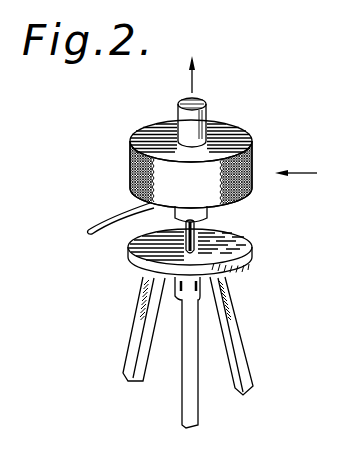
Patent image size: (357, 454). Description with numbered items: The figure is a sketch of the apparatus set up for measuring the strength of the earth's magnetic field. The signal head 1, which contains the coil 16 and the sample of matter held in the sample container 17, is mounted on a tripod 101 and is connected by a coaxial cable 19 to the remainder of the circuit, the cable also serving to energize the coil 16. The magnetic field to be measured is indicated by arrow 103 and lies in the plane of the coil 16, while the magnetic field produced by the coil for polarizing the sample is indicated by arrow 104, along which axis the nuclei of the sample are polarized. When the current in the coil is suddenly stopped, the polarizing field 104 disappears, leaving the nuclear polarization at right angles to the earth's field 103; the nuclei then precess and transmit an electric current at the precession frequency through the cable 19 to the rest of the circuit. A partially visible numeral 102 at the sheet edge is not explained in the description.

The signal head 1 is at (268, 110).
The coil 16 is at (253, 158).
The sample container 17 is at (178, 111).
The coaxial cable 19 is at (118, 213).
The tripod 101 is at (129, 268).
The reference direction 102 is at (349, 56).
The arrow indicating magnetic field to be measured 103 is at (309, 163).
The arrow indicating polarizing magnetic field 104 is at (194, 77).